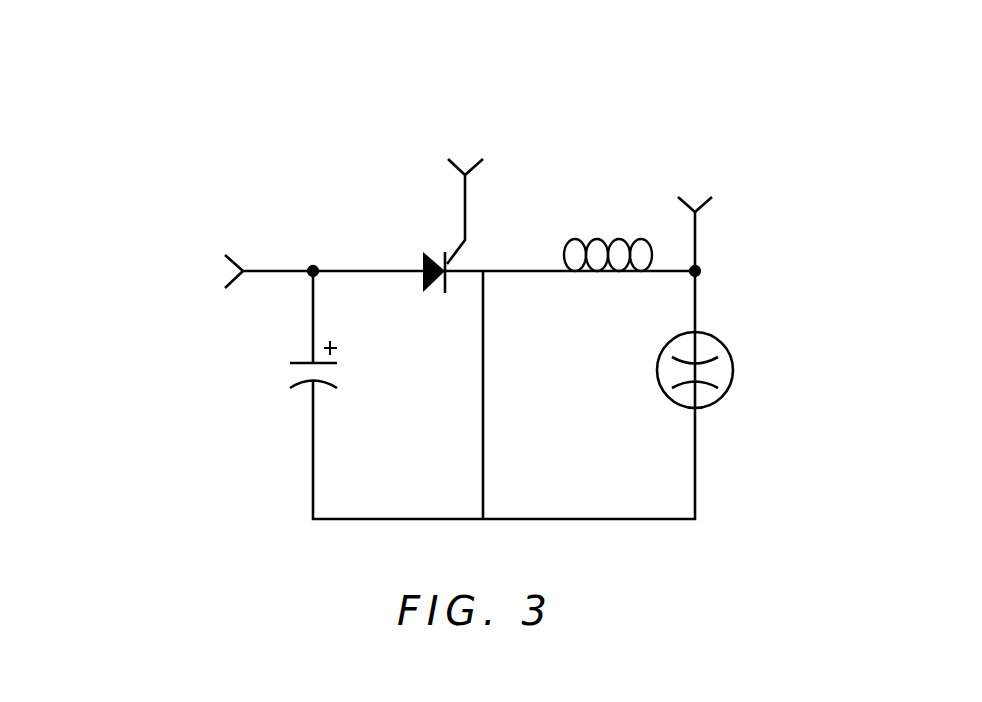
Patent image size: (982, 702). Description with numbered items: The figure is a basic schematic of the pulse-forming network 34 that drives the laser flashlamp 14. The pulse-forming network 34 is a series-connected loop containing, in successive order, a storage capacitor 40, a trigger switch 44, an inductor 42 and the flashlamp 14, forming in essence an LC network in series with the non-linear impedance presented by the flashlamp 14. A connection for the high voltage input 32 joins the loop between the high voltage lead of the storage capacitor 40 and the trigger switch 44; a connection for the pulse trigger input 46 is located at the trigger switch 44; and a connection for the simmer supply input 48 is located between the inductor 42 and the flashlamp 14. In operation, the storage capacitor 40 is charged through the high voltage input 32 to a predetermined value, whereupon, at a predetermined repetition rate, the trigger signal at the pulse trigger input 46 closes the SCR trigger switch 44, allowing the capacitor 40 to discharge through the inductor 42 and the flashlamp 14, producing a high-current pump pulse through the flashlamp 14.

The laser flashlamp 14 is at (710, 335).
The high voltage input 32 is at (262, 270).
The pulse-forming network 34 is at (518, 78).
The storage capacitor 40 is at (295, 363).
The inductor 42 is at (595, 240).
The trigger switch 44 is at (425, 262).
The pulse trigger input 46 is at (465, 196).
The simmer supply input 48 is at (697, 242).